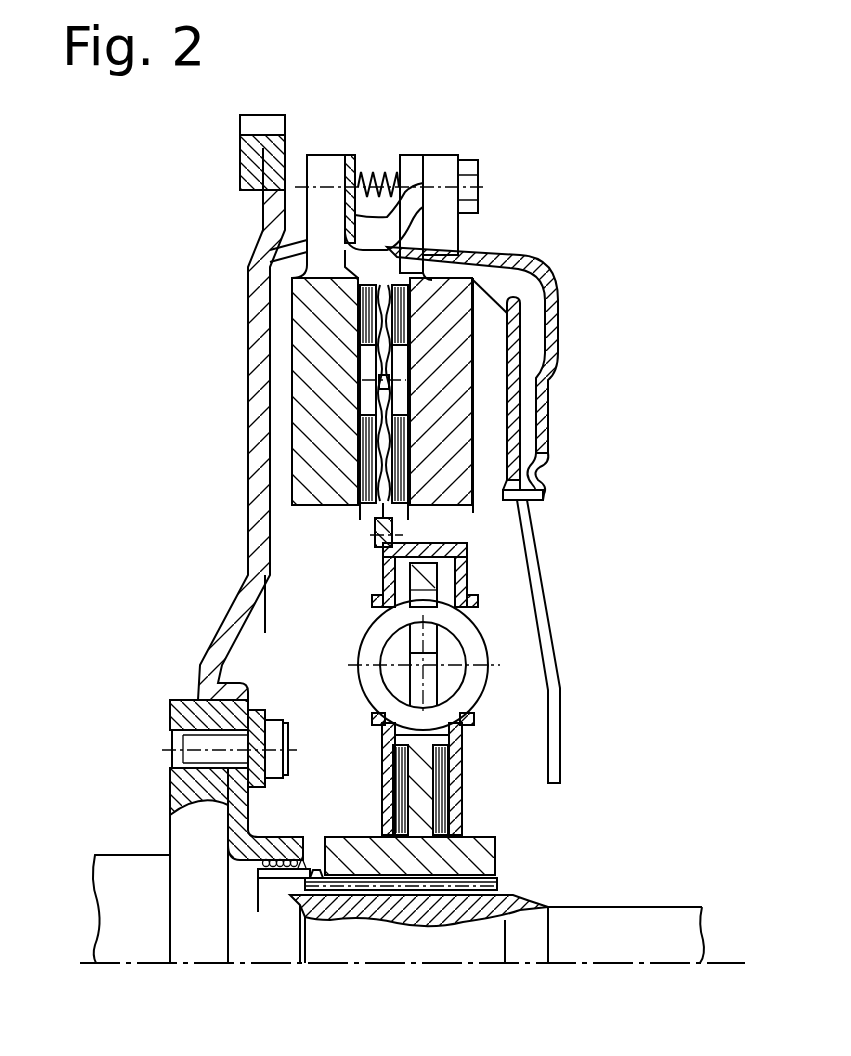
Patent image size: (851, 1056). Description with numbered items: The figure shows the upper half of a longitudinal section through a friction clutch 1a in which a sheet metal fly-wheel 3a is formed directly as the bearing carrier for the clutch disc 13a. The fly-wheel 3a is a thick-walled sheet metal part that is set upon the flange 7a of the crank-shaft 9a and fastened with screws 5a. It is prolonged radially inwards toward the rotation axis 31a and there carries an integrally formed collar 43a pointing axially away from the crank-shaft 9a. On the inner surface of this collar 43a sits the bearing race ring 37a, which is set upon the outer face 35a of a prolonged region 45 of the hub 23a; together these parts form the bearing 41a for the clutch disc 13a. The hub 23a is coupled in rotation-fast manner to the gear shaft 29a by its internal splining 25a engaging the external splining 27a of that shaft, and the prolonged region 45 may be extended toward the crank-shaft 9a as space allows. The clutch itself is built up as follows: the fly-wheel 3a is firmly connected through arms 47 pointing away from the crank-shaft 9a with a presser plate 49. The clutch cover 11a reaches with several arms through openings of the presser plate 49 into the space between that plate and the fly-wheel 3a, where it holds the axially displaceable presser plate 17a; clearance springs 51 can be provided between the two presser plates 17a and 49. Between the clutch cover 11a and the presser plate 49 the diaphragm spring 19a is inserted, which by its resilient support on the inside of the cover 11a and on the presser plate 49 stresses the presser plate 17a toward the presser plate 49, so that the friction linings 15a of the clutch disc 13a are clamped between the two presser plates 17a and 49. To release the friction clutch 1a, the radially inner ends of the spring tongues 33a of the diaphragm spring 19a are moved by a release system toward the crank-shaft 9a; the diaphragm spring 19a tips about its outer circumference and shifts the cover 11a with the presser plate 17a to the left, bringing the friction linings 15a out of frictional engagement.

The friction clutch 1a is at (192, 194).
The fly-wheel 3a is at (262, 232).
The screws 5a is at (183, 737).
The flange 7a is at (185, 710).
The crank-shaft 9a is at (113, 912).
The clutch cover 11a is at (548, 297).
The clutch disc 13a is at (327, 580).
The friction linings 15a is at (365, 330).
The presser plate 17a is at (303, 403).
The diaphragm spring 19a is at (515, 378).
The hub 23a is at (460, 850).
The internal splining 25a is at (480, 888).
The external splining 27a is at (498, 893).
The gear shaft 29a is at (623, 945).
The rotation axis 31a is at (710, 967).
The spring tongues 33a is at (540, 585).
The outer face 35a is at (327, 883).
The bearing race ring 37a is at (245, 860).
The bearing 41a is at (247, 884).
The collar 43a is at (197, 808).
The prolonged region 45 is at (287, 870).
The arms 47 is at (400, 215).
The presser plate 49 is at (537, 435).
The clearance springs 51 is at (381, 156).